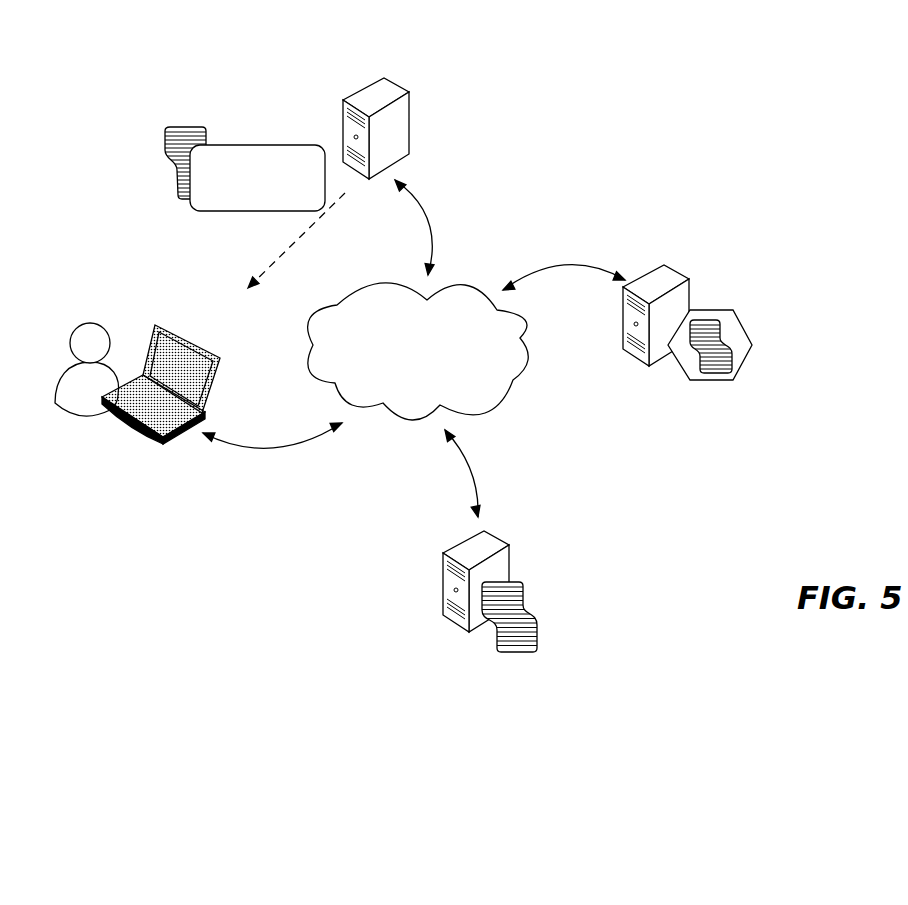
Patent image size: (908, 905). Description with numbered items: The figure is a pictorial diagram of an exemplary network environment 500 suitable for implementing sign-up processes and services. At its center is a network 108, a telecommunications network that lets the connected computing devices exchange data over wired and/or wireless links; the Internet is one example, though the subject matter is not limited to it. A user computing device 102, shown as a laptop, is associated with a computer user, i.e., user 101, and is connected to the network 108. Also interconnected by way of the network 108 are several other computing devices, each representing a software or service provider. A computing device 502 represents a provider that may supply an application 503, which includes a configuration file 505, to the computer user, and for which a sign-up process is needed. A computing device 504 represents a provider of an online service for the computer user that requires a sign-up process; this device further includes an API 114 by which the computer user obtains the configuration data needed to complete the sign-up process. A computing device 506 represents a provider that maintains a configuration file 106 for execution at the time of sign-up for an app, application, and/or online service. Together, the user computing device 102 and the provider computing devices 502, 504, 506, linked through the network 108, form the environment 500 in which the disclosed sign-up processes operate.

The network environment 500 is at (578, 104).
The computing device 502 is at (385, 78).
The application 503 is at (258, 145).
The configuration file 505 is at (183, 125).
The user 101 is at (87, 322).
The user computing device 102 is at (158, 322).
The network 108 is at (405, 373).
The API 114 is at (722, 302).
The computing device 504 is at (645, 365).
The computing device 506 is at (452, 627).
The configuration file 106 is at (510, 652).